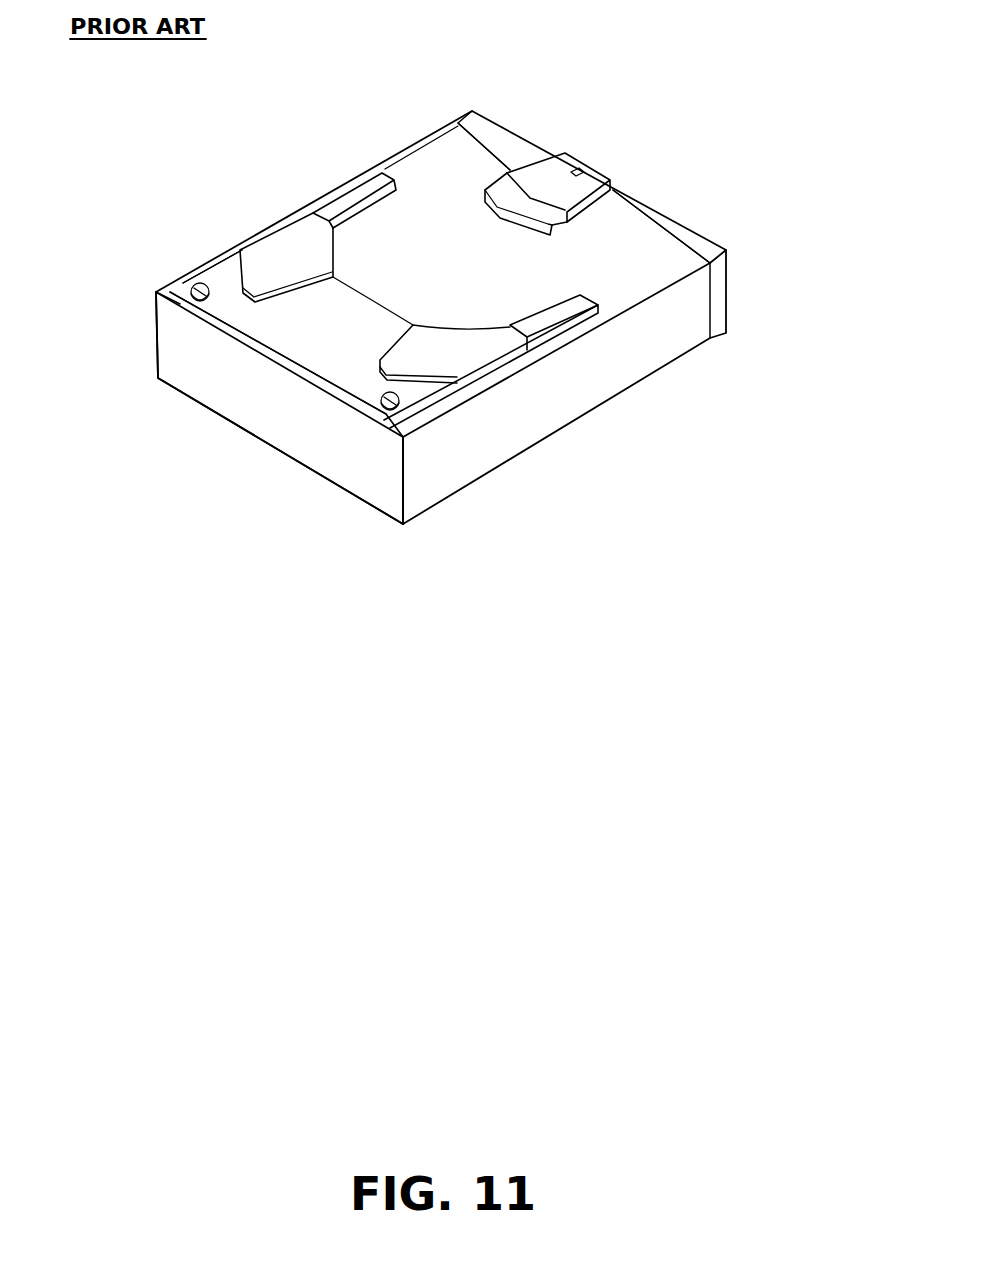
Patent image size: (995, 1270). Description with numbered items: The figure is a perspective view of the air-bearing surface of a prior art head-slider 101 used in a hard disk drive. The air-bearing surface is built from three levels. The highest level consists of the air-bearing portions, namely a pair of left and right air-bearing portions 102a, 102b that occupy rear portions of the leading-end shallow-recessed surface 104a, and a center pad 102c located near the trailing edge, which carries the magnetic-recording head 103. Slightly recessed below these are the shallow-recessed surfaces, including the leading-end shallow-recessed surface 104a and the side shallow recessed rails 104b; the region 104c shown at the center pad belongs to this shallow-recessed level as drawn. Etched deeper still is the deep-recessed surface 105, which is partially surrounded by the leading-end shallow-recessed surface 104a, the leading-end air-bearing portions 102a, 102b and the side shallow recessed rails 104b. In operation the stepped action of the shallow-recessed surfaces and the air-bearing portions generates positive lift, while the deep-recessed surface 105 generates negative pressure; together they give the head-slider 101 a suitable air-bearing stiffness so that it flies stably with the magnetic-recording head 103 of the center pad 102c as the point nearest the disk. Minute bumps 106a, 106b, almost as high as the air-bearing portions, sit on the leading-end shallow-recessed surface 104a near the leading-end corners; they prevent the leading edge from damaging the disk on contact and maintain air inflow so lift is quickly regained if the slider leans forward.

The head-slider 101 is at (592, 380).
The left air-bearing portion 102a is at (265, 265).
The right air-bearing portion 102b is at (462, 352).
The center pad 102c is at (548, 170).
The magnetic-recording head 103 is at (570, 168).
The leading-end shallow-recessed surface 104a is at (308, 352).
The side shallow recessed rails 104b is at (350, 200).
The positioning plate 104c is at (507, 190).
The deep-recessed surface 105 is at (443, 260).
The minute bump 106a is at (195, 297).
The minute bump 106b is at (388, 413).